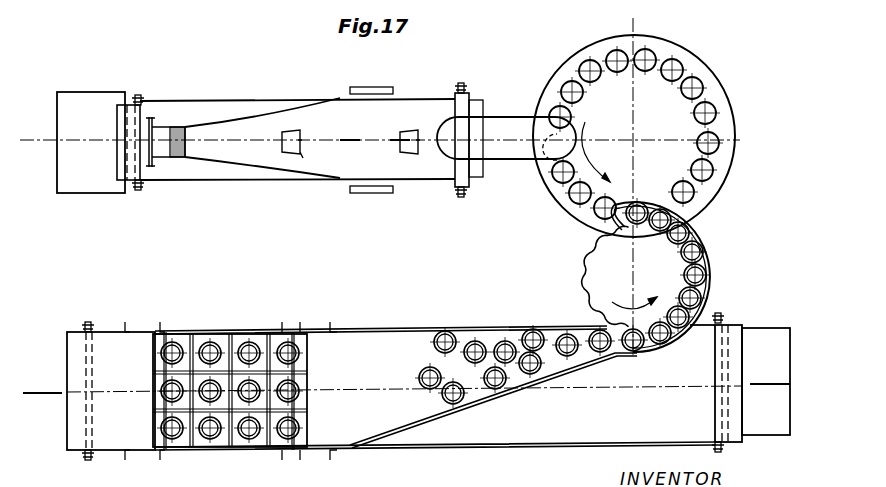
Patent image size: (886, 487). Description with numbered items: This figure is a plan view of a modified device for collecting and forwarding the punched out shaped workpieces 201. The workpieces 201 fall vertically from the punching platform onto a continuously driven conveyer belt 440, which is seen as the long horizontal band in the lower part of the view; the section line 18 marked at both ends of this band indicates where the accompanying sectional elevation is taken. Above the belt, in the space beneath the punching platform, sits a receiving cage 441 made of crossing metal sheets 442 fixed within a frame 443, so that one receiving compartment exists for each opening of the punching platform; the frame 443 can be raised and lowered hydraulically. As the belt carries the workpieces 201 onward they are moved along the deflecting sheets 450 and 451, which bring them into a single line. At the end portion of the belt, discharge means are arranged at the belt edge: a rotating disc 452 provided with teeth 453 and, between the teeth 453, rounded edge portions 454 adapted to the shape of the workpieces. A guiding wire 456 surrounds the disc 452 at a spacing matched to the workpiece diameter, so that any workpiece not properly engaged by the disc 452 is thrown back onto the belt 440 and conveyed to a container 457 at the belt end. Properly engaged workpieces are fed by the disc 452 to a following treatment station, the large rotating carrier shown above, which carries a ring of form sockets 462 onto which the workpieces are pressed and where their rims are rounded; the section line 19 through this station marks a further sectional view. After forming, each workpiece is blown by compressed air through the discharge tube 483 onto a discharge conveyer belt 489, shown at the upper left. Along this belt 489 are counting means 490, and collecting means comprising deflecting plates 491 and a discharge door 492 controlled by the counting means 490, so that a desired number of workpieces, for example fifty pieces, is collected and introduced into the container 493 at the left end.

The section line 18 is at (406, 380).
The section line 19 is at (497, 192).
The punched out shaped workpiece 201 is at (300, 152).
The conveyer belt 440 is at (585, 447).
The receiving cage 441 is at (222, 400).
The crossing metal sheets 442 is at (212, 339).
The frame 443 is at (307, 360).
The deflecting sheet 450 is at (430, 318).
The deflecting sheet 451 is at (470, 397).
The rotating disc 452 is at (605, 276).
The teeth 453 is at (660, 277).
The rounded edge portions 454 is at (590, 292).
The guiding wire 456 is at (708, 290).
The container 457 is at (762, 435).
The form socket 462 is at (563, 200).
The discharge tube 483 is at (503, 125).
The discharge conveyer belt 489 is at (225, 180).
The counting means 490 is at (385, 87).
The deflecting plates 491 is at (270, 118).
The discharge door 492 is at (170, 127).
The container 493 is at (91, 142).